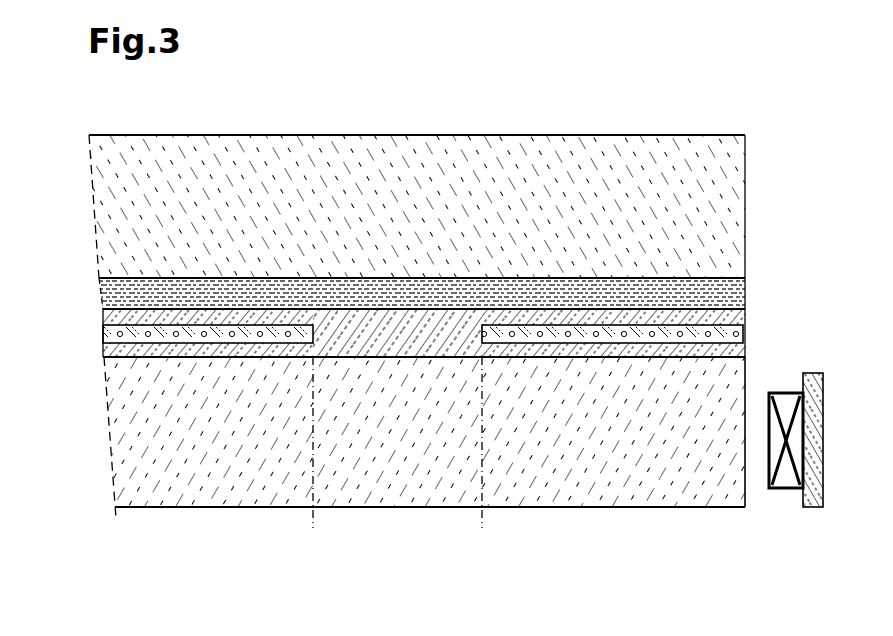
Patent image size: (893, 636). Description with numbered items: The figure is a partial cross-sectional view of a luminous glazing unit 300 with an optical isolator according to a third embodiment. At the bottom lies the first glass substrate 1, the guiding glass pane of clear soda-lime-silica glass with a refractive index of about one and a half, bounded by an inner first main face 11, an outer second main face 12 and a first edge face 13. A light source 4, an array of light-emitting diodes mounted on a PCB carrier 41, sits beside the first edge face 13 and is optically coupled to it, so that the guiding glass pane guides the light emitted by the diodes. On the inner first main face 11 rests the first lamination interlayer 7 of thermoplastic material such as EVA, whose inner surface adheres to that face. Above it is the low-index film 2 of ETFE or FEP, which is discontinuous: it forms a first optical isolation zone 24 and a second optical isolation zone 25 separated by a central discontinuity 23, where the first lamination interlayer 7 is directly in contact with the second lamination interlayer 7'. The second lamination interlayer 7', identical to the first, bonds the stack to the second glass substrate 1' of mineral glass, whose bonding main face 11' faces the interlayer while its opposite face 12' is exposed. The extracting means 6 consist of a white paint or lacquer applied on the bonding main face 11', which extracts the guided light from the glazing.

The luminous glazing unit 300 is at (695, 77).
The second glass substrate 1' is at (417, 206).
The first glass substrate 1 is at (424, 437).
The extracting means 6 is at (417, 298).
The second lamination interlayer 7' is at (388, 299).
The first lamination interlayer 7 is at (405, 382).
The low-index film 2 is at (110, 332).
The first main face 11 is at (424, 393).
The bonding main face 11' is at (422, 254).
The second main face 12 is at (430, 558).
The opposite face 12' is at (417, 101).
The first edge face 13 is at (745, 493).
The discontinuity 23 is at (488, 537).
The first optical isolation zone 24 is at (313, 537).
The second optical isolation zone 25 is at (742, 530).
The light source 4 is at (785, 490).
The PCB carrier 41 is at (812, 373).